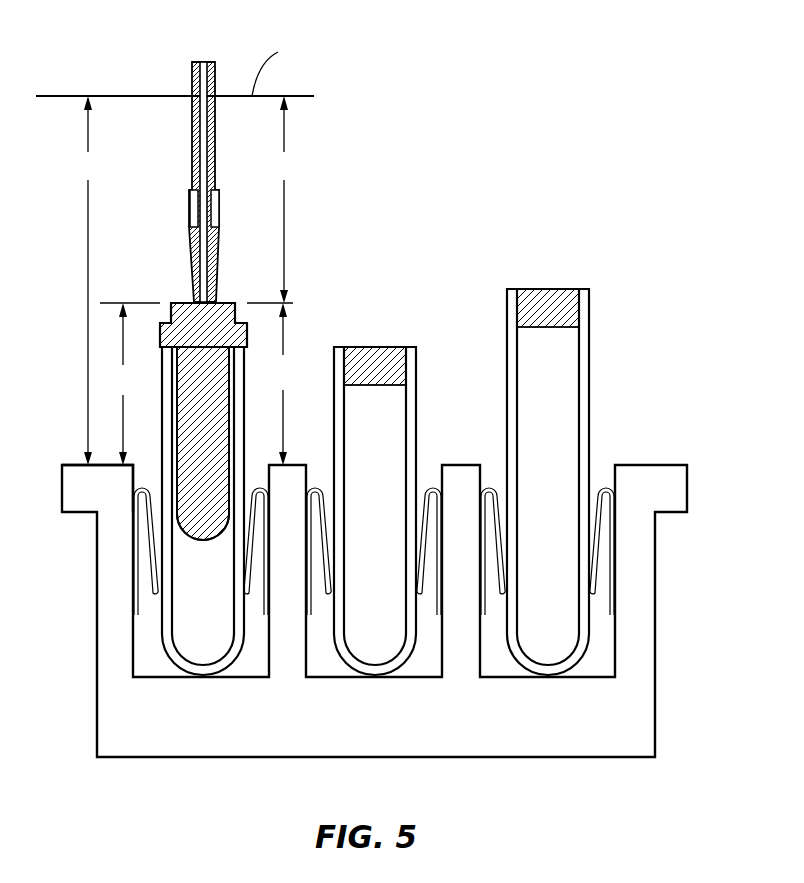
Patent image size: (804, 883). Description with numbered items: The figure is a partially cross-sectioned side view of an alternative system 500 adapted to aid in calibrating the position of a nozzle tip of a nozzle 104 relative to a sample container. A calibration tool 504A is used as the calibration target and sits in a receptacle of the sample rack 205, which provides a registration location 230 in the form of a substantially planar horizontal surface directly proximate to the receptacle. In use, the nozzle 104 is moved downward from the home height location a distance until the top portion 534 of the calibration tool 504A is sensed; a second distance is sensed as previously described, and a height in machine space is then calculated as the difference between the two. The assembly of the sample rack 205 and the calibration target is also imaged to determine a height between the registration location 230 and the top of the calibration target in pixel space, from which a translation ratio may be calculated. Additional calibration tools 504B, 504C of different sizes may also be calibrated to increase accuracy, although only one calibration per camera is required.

The system 500 is at (371, 163).
The nozzle 104 is at (193, 84).
The top portion 534 is at (173, 302).
The calibration tool 504A is at (182, 288).
The calibration tool 504B is at (387, 333).
The calibration tool 504C is at (559, 275).
The registration location 230 is at (70, 463).
The sample rack 205 is at (96, 612).